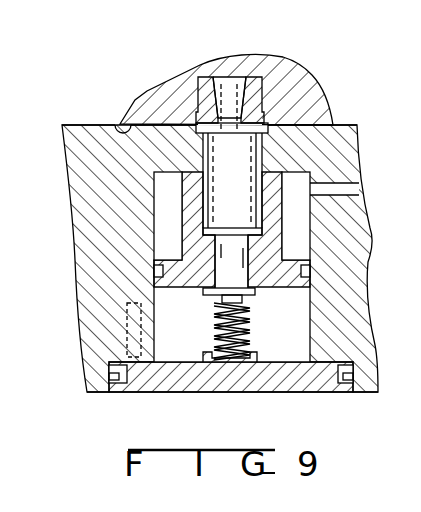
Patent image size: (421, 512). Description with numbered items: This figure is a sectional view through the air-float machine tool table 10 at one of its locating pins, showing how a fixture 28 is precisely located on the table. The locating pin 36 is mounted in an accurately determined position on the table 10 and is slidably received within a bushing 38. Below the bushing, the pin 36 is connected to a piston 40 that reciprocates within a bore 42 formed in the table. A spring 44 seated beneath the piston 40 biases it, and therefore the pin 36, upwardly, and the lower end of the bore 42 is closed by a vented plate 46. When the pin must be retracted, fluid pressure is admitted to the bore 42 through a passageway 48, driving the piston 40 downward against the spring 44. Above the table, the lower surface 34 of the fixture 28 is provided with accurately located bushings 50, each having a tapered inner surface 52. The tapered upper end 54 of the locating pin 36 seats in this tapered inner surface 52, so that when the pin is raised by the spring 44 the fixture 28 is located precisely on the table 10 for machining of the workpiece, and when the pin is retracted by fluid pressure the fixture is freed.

The air-float machine tool table 10 is at (80, 272).
The fixture 28 is at (175, 76).
The lower surface 34 is at (115, 124).
The locating pin 36 is at (252, 168).
The bushing 38 is at (185, 212).
The piston 40 is at (298, 286).
The bore 42 is at (308, 320).
The spring 44 is at (213, 324).
The vented plate 46 is at (190, 385).
The passageway 48 is at (340, 189).
The bushing 50 is at (258, 93).
The tapered inner surface 52 is at (243, 90).
The tapered upper end 54 is at (222, 77).